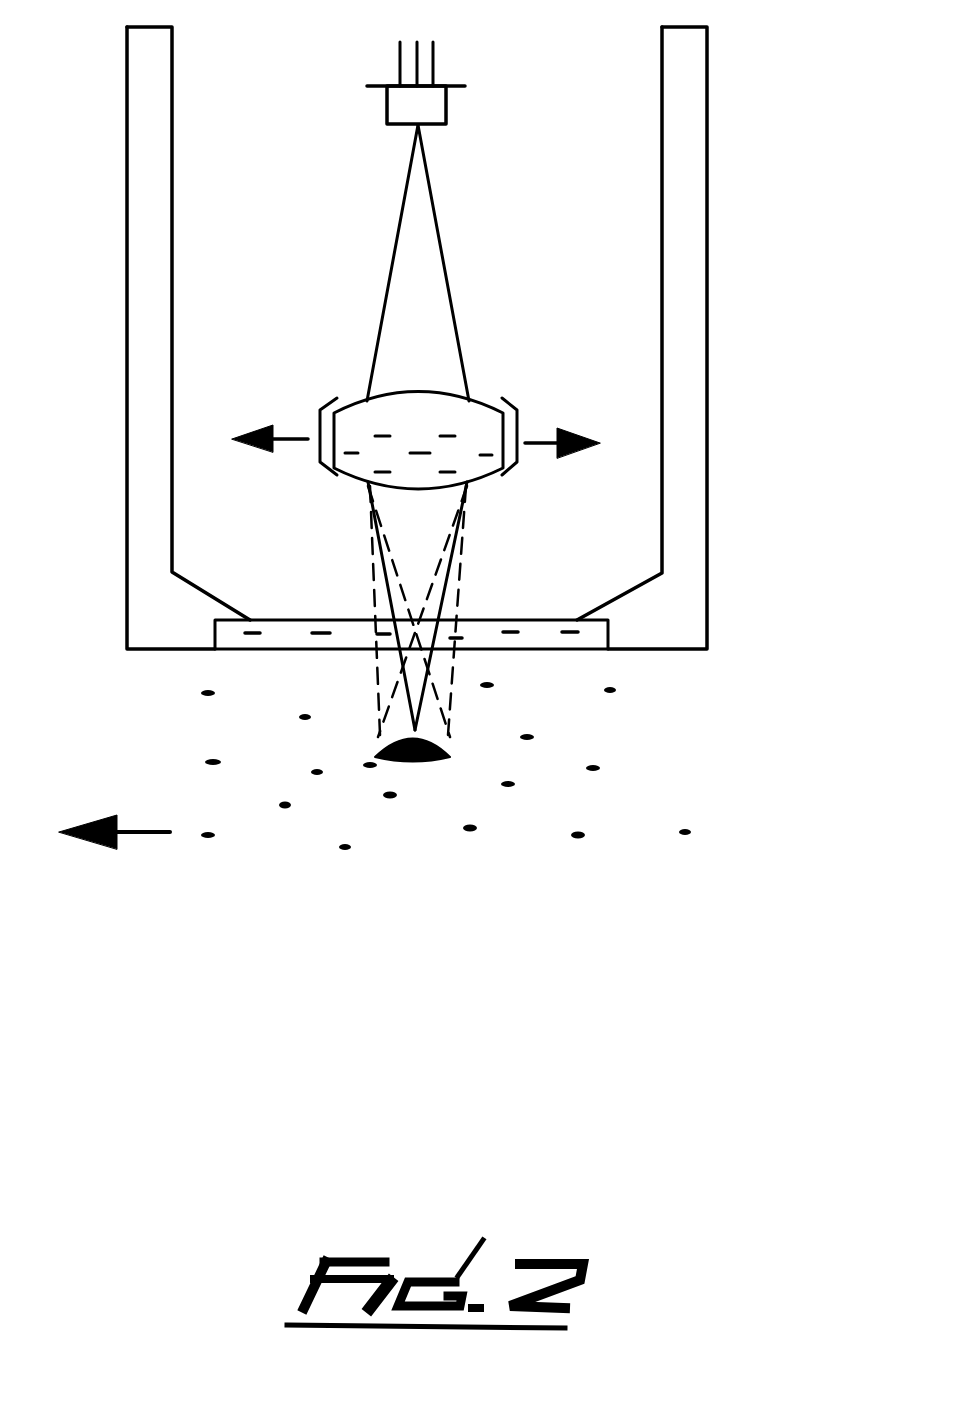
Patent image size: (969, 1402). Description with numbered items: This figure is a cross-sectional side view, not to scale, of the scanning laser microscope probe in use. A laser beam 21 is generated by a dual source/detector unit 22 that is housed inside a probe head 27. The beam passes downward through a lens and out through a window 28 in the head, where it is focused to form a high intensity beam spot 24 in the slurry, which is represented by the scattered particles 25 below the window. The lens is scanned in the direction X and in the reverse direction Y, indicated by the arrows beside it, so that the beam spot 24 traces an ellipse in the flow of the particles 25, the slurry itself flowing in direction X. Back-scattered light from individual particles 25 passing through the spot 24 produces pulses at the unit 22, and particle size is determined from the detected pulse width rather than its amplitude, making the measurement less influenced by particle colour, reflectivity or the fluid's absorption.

The laser beam 21 is at (445, 252).
The dual source/detector unit 22 is at (440, 115).
The beam spot 24 is at (423, 762).
The particles 25 is at (285, 808).
The probe head 27 is at (687, 408).
The window 28 is at (553, 642).